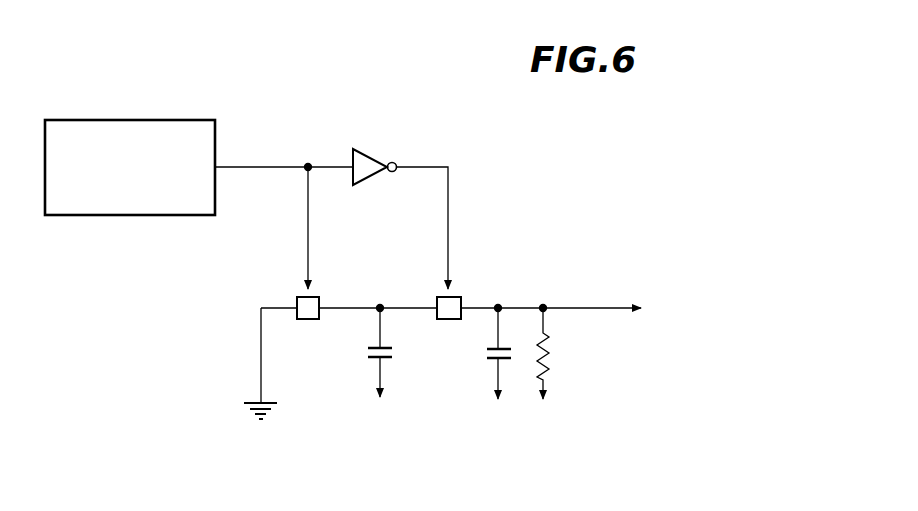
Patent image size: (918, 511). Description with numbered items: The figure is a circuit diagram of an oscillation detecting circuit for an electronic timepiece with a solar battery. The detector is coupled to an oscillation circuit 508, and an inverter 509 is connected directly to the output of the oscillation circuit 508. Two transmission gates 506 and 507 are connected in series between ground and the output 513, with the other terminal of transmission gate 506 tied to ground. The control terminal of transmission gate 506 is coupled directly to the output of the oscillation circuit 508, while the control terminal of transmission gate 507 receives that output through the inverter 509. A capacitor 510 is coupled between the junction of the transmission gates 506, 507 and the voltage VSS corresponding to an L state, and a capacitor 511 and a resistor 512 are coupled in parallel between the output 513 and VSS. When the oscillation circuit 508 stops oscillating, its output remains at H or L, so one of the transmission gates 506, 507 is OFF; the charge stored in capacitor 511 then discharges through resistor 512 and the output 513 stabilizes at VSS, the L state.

The transmission gate 506 is at (319, 303).
The transmission gate 507 is at (455, 322).
The oscillation circuit 508 is at (126, 120).
The inverter 509 is at (381, 142).
The capacitor 510 is at (370, 352).
The capacitor 511 is at (482, 353).
The resistor 512 is at (549, 358).
The output 513 is at (578, 310).